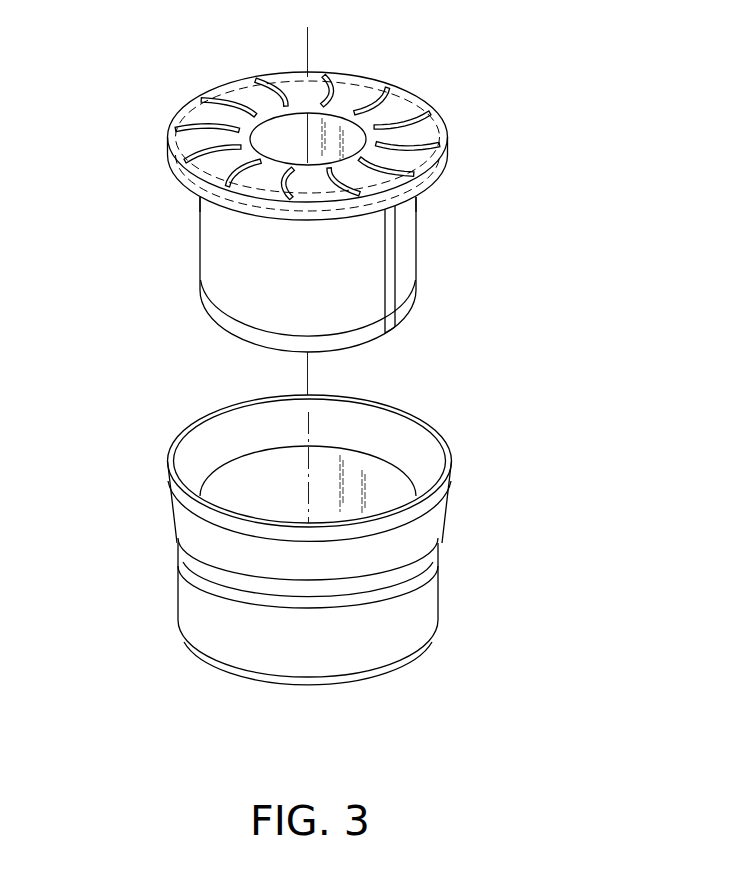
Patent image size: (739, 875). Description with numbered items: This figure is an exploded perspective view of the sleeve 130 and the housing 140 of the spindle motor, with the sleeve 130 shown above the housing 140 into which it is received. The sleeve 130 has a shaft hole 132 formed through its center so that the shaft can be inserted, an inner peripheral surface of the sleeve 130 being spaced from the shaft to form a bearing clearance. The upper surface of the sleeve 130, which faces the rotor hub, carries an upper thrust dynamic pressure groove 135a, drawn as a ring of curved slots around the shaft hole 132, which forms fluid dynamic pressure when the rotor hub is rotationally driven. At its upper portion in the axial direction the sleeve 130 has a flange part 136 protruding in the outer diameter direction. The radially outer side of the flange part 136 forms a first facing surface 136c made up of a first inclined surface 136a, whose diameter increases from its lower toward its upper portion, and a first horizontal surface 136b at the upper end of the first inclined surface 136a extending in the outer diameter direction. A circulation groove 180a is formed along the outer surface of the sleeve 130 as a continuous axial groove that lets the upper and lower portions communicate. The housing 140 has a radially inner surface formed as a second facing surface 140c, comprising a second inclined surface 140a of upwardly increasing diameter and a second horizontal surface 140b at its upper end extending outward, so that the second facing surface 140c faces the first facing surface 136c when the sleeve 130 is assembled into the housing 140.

The sleeve 130 is at (470, 145).
The shaft hole 132 is at (281, 128).
The upper thrust dynamic pressure groove 135a is at (203, 128).
The flange part 136 is at (385, 93).
The first inclined surface 136a is at (287, 217).
The first horizontal surface 136b is at (275, 212).
The first facing surface 136c is at (99, 215).
The circulation groove 180a is at (391, 278).
The housing 140 is at (432, 603).
The second inclined surface 140a is at (422, 438).
The second horizontal surface 140b is at (450, 458).
The second facing surface 140c is at (574, 410).